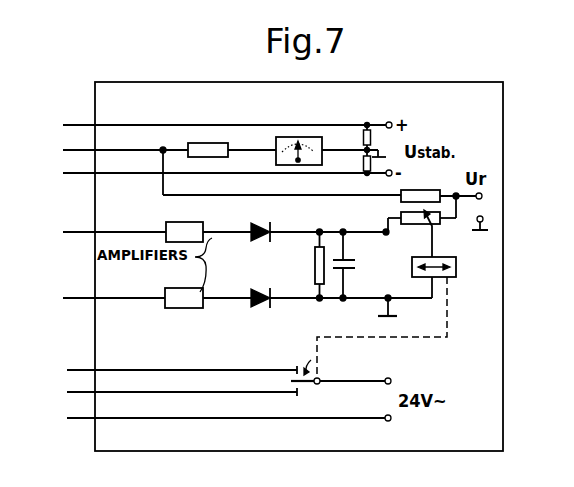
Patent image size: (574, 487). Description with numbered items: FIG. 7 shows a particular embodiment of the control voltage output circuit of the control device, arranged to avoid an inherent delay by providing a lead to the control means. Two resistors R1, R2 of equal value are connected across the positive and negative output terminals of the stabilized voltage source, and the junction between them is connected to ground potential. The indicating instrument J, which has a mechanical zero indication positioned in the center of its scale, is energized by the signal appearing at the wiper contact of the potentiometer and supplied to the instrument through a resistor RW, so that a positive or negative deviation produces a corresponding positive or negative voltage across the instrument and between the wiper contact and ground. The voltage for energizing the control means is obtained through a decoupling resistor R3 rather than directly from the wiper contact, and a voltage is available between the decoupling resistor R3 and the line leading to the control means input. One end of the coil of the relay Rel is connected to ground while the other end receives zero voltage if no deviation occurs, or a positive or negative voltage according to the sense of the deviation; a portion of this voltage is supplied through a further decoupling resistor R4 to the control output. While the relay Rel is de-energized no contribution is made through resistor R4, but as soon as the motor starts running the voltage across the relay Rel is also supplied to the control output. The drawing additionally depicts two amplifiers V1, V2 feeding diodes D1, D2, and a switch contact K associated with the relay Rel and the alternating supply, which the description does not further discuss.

The resistor RW is at (206, 150).
The indicating instrument J is at (299, 133).
The resistor R1 is at (362, 141).
The resistor R2 is at (372, 160).
The decoupling resistor R3 is at (421, 199).
The further decoupling resistor R4 is at (426, 226).
The amplifier V1 is at (172, 224).
The amplifier V2 is at (184, 293).
The diode D1 is at (260, 224).
The diode D2 is at (262, 292).
The relay Rel is at (404, 316).
The switch contact K is at (338, 364).